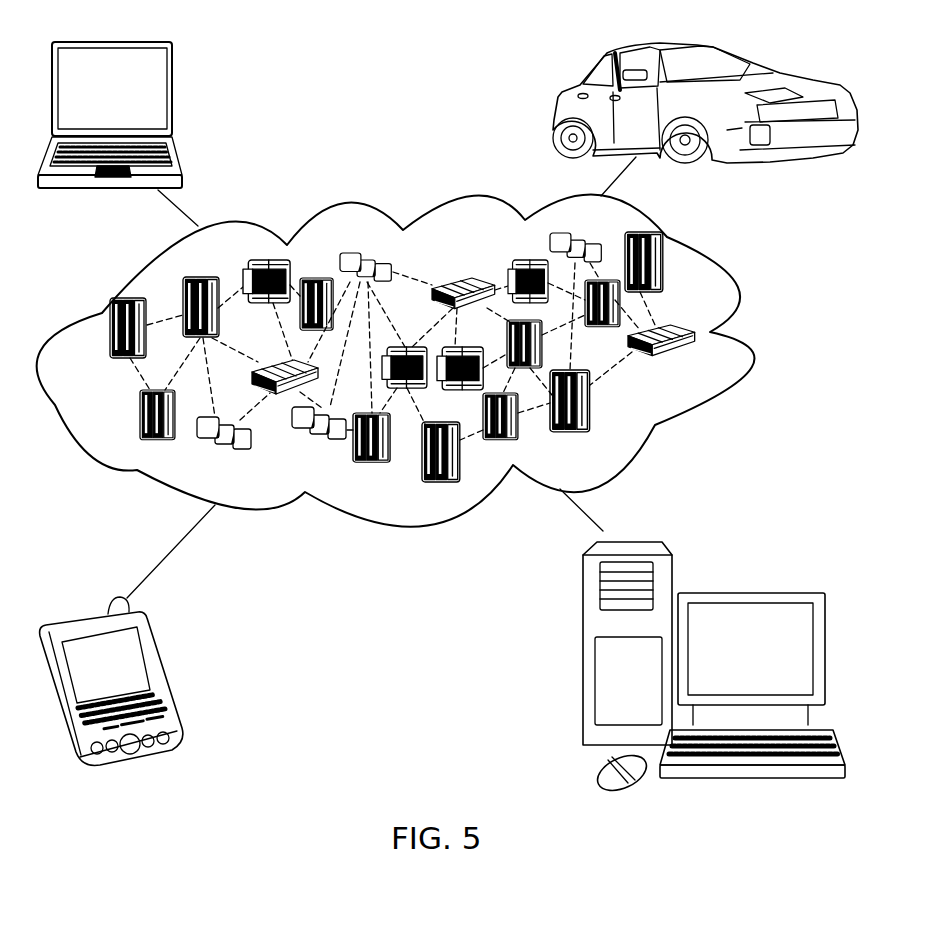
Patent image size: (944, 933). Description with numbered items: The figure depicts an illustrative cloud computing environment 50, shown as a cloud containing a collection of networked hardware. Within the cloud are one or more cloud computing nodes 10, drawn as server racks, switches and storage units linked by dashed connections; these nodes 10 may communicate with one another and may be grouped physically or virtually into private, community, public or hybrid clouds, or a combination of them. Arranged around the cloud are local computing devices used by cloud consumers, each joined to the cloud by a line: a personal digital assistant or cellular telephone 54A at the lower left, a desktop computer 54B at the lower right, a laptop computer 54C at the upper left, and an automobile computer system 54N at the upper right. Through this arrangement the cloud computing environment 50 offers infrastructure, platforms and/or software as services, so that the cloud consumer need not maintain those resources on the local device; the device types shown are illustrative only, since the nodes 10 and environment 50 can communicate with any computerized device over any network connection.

The laptop computer 54C is at (172, 98).
The automobile computer system 54N is at (557, 111).
The personal digital assistant or cellular telephone 54A is at (163, 677).
The desktop computer 54B is at (748, 592).
The cloud computing environment 50 is at (748, 337).
The cloud computing nodes 10 is at (697, 364).